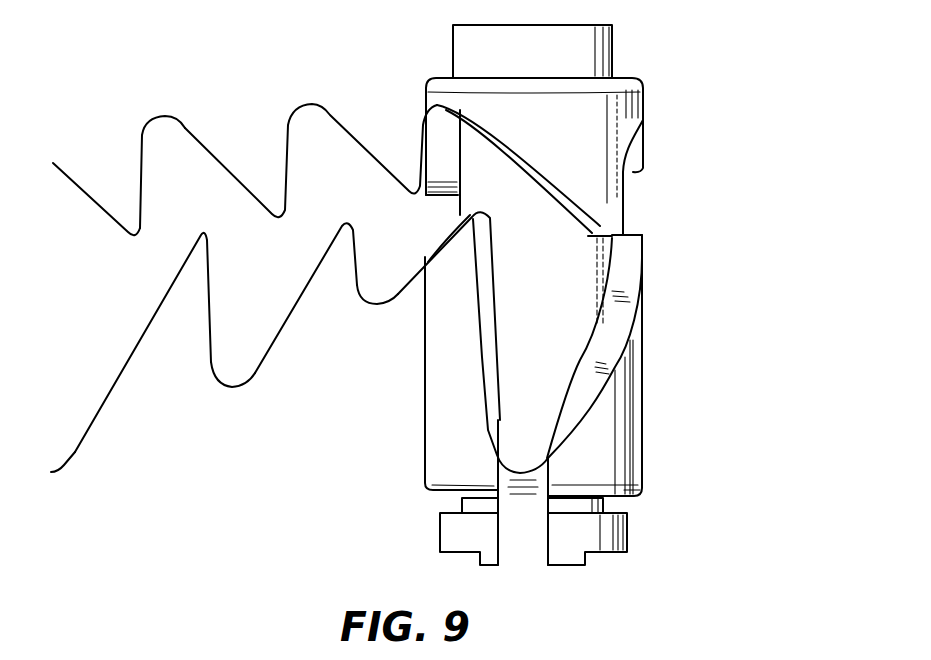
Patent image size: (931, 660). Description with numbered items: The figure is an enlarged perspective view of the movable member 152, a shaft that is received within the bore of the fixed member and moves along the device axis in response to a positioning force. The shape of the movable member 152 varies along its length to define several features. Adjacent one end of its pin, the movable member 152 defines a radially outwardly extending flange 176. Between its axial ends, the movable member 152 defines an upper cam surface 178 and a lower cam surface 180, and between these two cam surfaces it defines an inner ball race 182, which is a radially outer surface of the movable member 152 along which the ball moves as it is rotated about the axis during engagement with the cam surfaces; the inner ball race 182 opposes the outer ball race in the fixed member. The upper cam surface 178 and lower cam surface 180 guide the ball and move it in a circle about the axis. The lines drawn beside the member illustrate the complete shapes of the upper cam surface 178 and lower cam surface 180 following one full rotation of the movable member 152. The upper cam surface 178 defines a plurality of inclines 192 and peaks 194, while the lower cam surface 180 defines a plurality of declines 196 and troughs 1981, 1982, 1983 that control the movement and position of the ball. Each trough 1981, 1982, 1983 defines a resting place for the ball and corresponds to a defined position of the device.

The movable member 152 is at (711, 94).
The flange 176 is at (613, 543).
The upper cam surface 178 is at (590, 217).
The lower cam surface 180 is at (615, 326).
The inner ball race 182 is at (543, 273).
The inclines 192 is at (198, 137).
The peaks 194 is at (152, 116).
The declines 196 is at (285, 327).
The trough 1981 is at (367, 303).
The trough 1982 is at (57, 468).
The trough 1983 is at (235, 387).